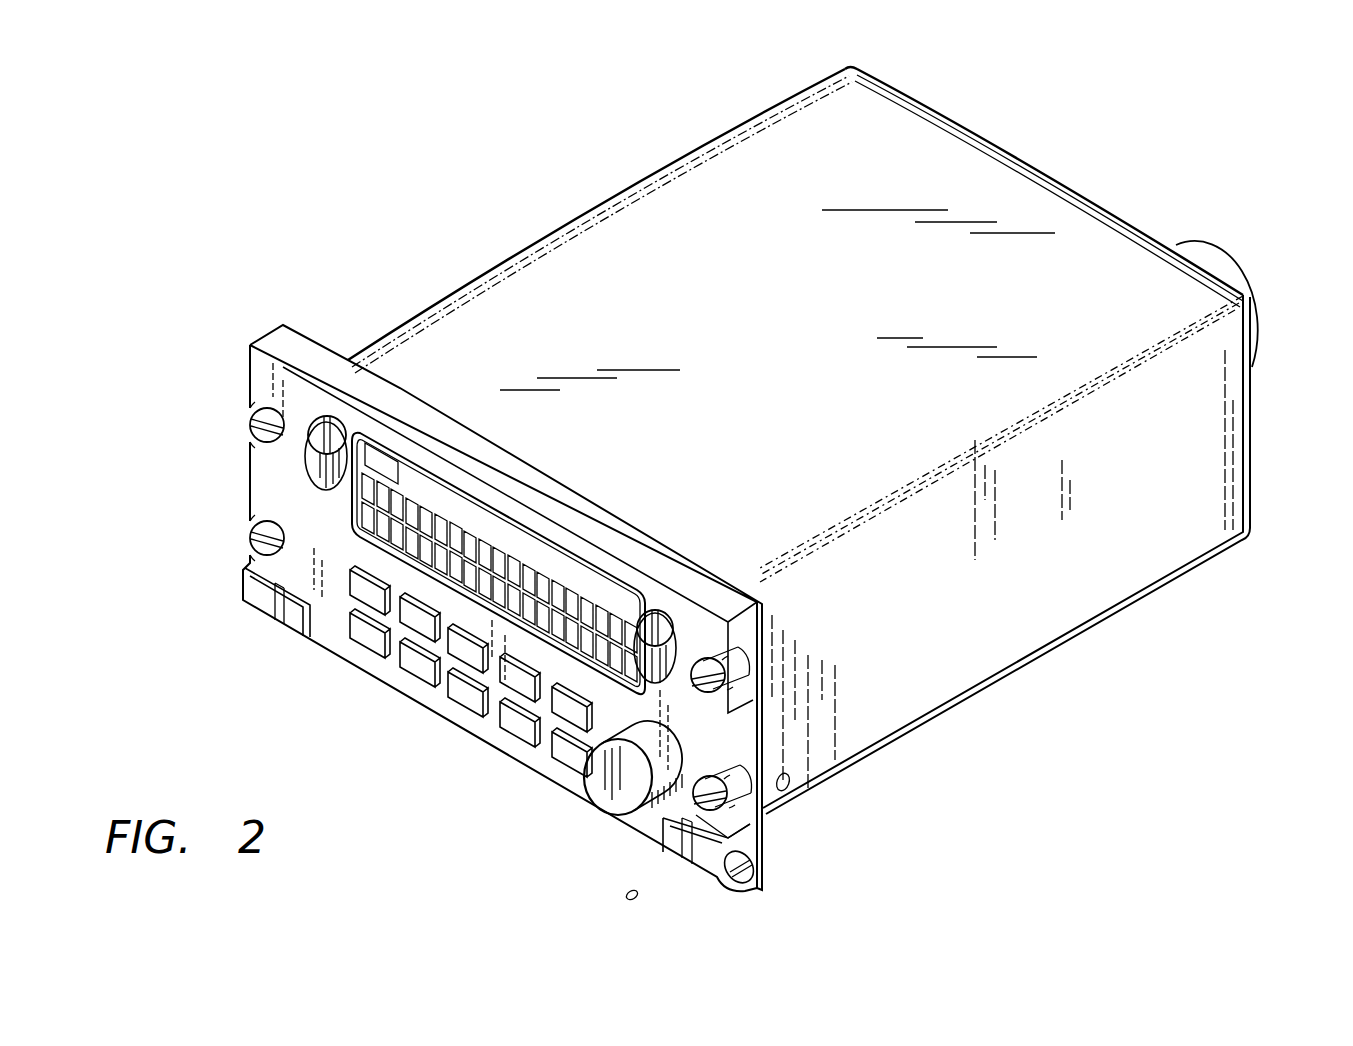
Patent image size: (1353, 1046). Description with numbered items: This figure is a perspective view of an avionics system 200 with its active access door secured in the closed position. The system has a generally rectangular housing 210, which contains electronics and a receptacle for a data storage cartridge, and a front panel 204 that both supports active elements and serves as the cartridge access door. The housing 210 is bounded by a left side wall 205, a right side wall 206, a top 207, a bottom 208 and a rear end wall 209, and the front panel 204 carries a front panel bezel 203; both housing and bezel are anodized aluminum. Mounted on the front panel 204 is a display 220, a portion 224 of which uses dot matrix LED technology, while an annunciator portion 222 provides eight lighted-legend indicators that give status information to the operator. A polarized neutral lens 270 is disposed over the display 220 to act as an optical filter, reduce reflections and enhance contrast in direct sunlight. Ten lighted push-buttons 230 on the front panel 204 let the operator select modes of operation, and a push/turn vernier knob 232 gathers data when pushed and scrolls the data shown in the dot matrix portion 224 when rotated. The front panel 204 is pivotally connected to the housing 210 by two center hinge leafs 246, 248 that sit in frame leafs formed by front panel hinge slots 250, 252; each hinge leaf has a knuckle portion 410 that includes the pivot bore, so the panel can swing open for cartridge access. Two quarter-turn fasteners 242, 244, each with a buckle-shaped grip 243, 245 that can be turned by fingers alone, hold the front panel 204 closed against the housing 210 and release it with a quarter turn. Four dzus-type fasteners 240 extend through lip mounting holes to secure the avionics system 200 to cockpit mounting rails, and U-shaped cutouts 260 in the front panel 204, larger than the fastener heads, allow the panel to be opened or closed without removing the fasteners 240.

The avionics system 200 is at (754, 497).
The front panel bezel 203 is at (263, 382).
The front panel 204 is at (430, 681).
The left side wall 205 is at (595, 210).
The right side wall 206 is at (1045, 615).
The top 207 is at (945, 165).
The bottom 208 is at (442, 720).
The rear end wall 209 is at (1075, 192).
The housing 210 is at (1187, 403).
The display 220 is at (509, 477).
The annunciator portion 222 is at (413, 483).
The dot matrix display portion 224 is at (567, 593).
The lighted push-buttons 230 is at (400, 668).
The push/turn vernier knob 232 is at (602, 777).
The fasteners 240 is at (262, 415).
The quarter-turn fastener 242 is at (337, 427).
The buckle-shaped grip 243 is at (307, 477).
The quarter-turn fastener 244 is at (653, 607).
The buckle-shaped grip 245 is at (682, 648).
The center hinge leaf 246 is at (278, 625).
The center hinge leaf 248 is at (685, 858).
The front panel hinge slot 250 is at (238, 624).
The front panel hinge slot 252 is at (654, 868).
The U-shaped cutouts 260 is at (255, 441).
The polarized neutral lens 270 is at (447, 510).
The knuckle portion 410 is at (695, 848).